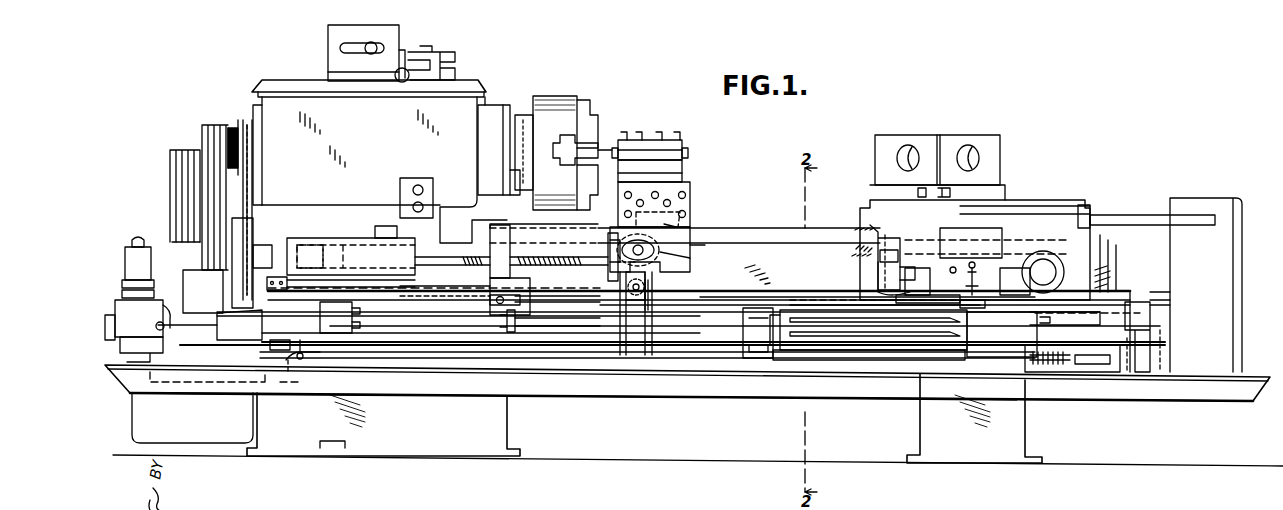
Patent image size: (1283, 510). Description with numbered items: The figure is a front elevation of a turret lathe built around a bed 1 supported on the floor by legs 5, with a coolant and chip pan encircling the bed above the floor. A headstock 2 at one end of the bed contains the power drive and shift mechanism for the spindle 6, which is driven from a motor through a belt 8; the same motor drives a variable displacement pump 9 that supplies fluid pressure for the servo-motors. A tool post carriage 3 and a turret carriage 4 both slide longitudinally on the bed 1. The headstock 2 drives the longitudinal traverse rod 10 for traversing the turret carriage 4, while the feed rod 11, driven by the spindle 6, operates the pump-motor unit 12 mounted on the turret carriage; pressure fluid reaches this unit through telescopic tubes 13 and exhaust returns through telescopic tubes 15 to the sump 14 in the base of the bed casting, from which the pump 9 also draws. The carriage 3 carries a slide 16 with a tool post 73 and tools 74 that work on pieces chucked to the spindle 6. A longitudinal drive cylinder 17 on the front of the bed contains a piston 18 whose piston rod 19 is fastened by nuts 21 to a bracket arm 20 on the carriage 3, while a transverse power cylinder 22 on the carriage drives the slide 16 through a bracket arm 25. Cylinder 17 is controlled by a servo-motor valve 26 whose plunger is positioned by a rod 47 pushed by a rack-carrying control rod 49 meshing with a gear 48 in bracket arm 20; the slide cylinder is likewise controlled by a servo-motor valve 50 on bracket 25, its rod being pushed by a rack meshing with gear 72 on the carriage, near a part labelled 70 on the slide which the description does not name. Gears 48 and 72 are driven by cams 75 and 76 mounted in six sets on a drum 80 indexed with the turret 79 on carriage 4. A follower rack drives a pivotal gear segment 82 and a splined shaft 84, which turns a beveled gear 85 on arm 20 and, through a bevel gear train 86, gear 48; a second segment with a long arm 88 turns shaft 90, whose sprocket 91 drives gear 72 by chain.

The bed 1 is at (782, 236).
The headstock 2 is at (294, 79).
The tool post carriage 3 is at (600, 218).
The turret carriage 4 is at (1006, 196).
The legs 5 is at (508, 424).
The spindle 6 is at (228, 134).
The belt 8 is at (210, 122).
The variable displacement pump 9 is at (134, 262).
The longitudinal traverse rod 10 is at (360, 350).
The feed rod 11 is at (742, 290).
The pump-motor unit 12 is at (887, 233).
The telescopic tubes 13 is at (412, 312).
The sump 14 is at (291, 360).
The telescopic tubes 15 is at (440, 333).
The slide 16 is at (692, 196).
The longitudinal drive cylinder 17 is at (343, 238).
The piston 18 is at (325, 256).
The piston rod 19 is at (448, 253).
The bracket arm 20 is at (518, 279).
The nuts 21 is at (500, 268).
The transverse power cylinder 22 is at (660, 262).
The bracket arm 25 is at (684, 254).
The servo-motor valve 26 is at (378, 297).
The rod 47 is at (445, 290).
The gear 48 is at (530, 300).
The control rod 49 is at (445, 302).
The servo-motor valve 50 is at (620, 268).
The slot 70 is at (675, 217).
The gear 72 is at (612, 280).
The tool post 73 is at (648, 138).
The tools 74 is at (614, 152).
The cam 75 is at (823, 298).
The cam 76 is at (918, 303).
The turret 79 is at (962, 134).
The drum 80 is at (834, 342).
The pivotal gear segment 82 is at (965, 312).
The shaft 84 is at (580, 330).
The beveled gear 85 is at (512, 330).
The bevel gear train 86 is at (500, 318).
The long arm 88 is at (972, 285).
The shaft 90 is at (708, 297).
The sprocket 91 is at (660, 288).